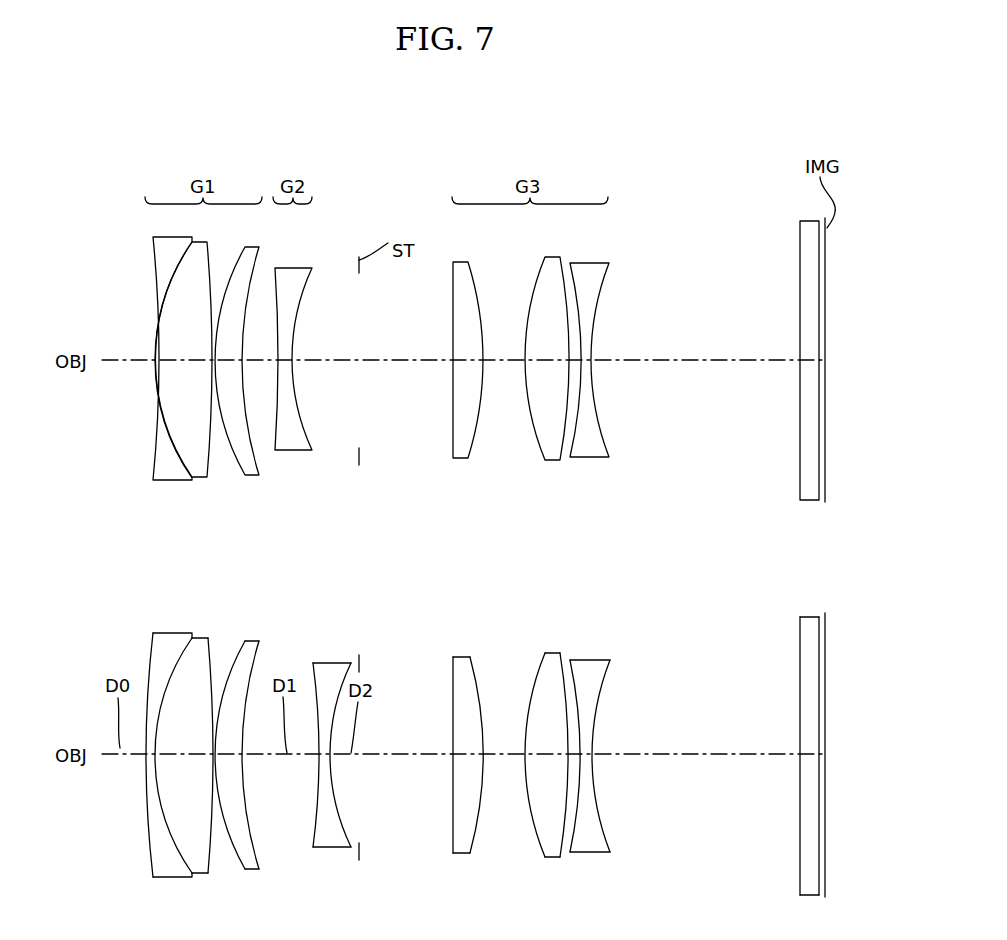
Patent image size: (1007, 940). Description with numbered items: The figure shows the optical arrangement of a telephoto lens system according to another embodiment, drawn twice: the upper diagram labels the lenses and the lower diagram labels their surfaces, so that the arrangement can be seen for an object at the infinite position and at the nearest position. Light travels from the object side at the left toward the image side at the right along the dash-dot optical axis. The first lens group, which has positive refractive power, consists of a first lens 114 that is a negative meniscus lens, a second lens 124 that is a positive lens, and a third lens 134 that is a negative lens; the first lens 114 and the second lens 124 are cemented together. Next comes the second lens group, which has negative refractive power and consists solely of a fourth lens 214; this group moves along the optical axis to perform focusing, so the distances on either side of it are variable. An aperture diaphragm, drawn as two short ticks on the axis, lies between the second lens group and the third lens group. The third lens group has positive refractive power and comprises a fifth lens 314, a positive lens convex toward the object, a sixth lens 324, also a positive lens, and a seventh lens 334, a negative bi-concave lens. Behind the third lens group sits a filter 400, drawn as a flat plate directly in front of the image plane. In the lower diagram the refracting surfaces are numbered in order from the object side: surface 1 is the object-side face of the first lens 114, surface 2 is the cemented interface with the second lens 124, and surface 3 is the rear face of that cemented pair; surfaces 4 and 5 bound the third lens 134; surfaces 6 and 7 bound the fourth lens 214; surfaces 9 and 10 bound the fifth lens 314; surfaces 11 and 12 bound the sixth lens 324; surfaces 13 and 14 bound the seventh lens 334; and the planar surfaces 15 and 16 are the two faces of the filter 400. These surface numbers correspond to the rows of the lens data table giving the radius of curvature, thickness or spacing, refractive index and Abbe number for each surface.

The first lens 114 is at (172, 480).
The second lens 124 is at (197, 477).
The third lens 134 is at (251, 475).
The fourth lens 214 is at (292, 450).
The fifth lens 314 is at (461, 458).
The sixth lens 324 is at (550, 460).
The seventh lens 334 is at (588, 457).
The filter 400 is at (803, 242).
The surface 1 is at (147, 800).
The surface 2 is at (168, 830).
The surface 3 is at (205, 847).
The surface 4 is at (222, 807).
The surface 5 is at (253, 835).
The surface 6 is at (322, 792).
The surface 7 is at (343, 820).
The surface 9 is at (453, 828).
The surface 10 is at (477, 828).
The surface 11 is at (535, 827).
The surface 12 is at (562, 845).
The surface 13 is at (582, 803).
The surface 14 is at (603, 833).
The surface 15 is at (800, 823).
The surface 16 is at (819, 853).